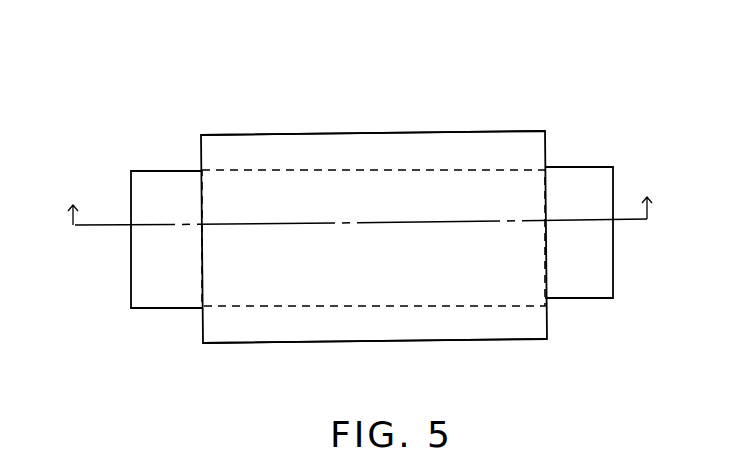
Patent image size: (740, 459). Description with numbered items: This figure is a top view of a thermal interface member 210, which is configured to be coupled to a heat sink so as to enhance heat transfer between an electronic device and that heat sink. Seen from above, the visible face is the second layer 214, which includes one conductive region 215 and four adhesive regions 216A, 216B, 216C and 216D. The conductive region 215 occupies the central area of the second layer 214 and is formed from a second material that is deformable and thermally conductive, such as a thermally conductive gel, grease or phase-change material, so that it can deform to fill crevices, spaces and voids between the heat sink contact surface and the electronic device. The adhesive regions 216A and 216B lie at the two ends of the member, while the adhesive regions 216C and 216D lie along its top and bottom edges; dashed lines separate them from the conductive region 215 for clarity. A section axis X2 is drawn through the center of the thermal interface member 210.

The thermal interface member 210 is at (190, 38).
The second layer 214 is at (245, 153).
The conductive region 215 is at (317, 208).
The adhesive region 216A is at (140, 188).
The adhesive region 216B is at (585, 185).
The adhesive region 216C is at (385, 148).
The adhesive region 216D is at (430, 325).
The section axis X2 is at (359, 197).